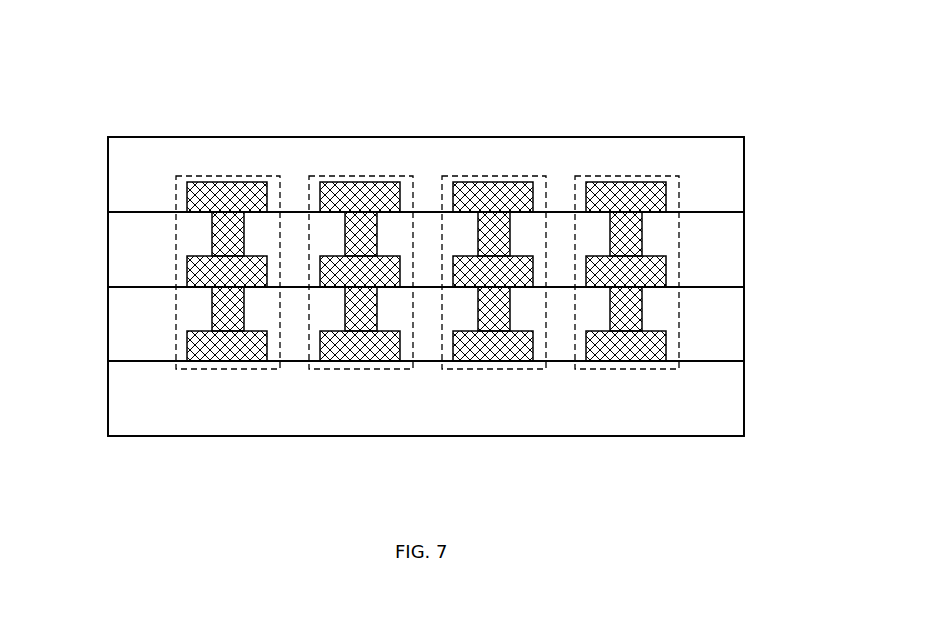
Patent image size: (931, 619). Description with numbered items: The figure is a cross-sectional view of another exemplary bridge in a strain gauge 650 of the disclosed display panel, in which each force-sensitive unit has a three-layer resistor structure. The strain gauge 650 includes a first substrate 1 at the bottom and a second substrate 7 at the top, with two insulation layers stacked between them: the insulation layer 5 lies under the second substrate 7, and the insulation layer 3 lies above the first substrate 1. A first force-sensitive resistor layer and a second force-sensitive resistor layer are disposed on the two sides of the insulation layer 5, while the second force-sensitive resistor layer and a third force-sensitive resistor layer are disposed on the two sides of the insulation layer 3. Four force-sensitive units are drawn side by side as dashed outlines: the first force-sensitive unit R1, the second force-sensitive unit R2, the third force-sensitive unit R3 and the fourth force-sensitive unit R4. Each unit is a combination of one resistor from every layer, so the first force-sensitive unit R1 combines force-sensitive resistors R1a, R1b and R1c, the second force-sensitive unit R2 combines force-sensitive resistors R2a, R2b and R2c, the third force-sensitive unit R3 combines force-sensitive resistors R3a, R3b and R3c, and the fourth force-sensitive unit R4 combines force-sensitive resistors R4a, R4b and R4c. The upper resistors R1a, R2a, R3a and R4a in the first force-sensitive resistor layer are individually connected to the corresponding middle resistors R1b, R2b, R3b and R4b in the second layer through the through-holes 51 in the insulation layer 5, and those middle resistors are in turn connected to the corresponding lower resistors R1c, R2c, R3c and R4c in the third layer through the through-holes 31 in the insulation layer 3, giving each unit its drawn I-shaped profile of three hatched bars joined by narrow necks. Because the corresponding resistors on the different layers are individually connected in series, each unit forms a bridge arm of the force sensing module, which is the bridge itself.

The strain gauge 650 is at (172, 45).
The second substrate 7 is at (182, 158).
The insulation layer 5 is at (172, 238).
The through-hole 51 is at (642, 232).
The insulation layer 3 is at (720, 347).
The through-hole 31 is at (212, 305).
The first substrate 1 is at (183, 400).
The first force-sensitive unit R1 is at (179, 279).
The force-sensitive resistor R1a is at (228, 193).
The force-sensitive resistor R1b is at (228, 272).
The force-sensitive resistor R1c is at (228, 345).
The second force-sensitive unit R2 is at (383, 279).
The force-sensitive resistor R2a is at (361, 193).
The force-sensitive resistor R2b is at (361, 272).
The force-sensitive resistor R2c is at (361, 345).
The third force-sensitive unit R3 is at (517, 279).
The force-sensitive resistor R3a is at (494, 193).
The force-sensitive resistor R3b is at (494, 272).
The force-sensitive resistor R3c is at (494, 345).
The fourth force-sensitive unit R4 is at (708, 279).
The force-sensitive resistor R4a is at (627, 193).
The force-sensitive resistor R4b is at (628, 272).
The force-sensitive resistor R4c is at (627, 348).